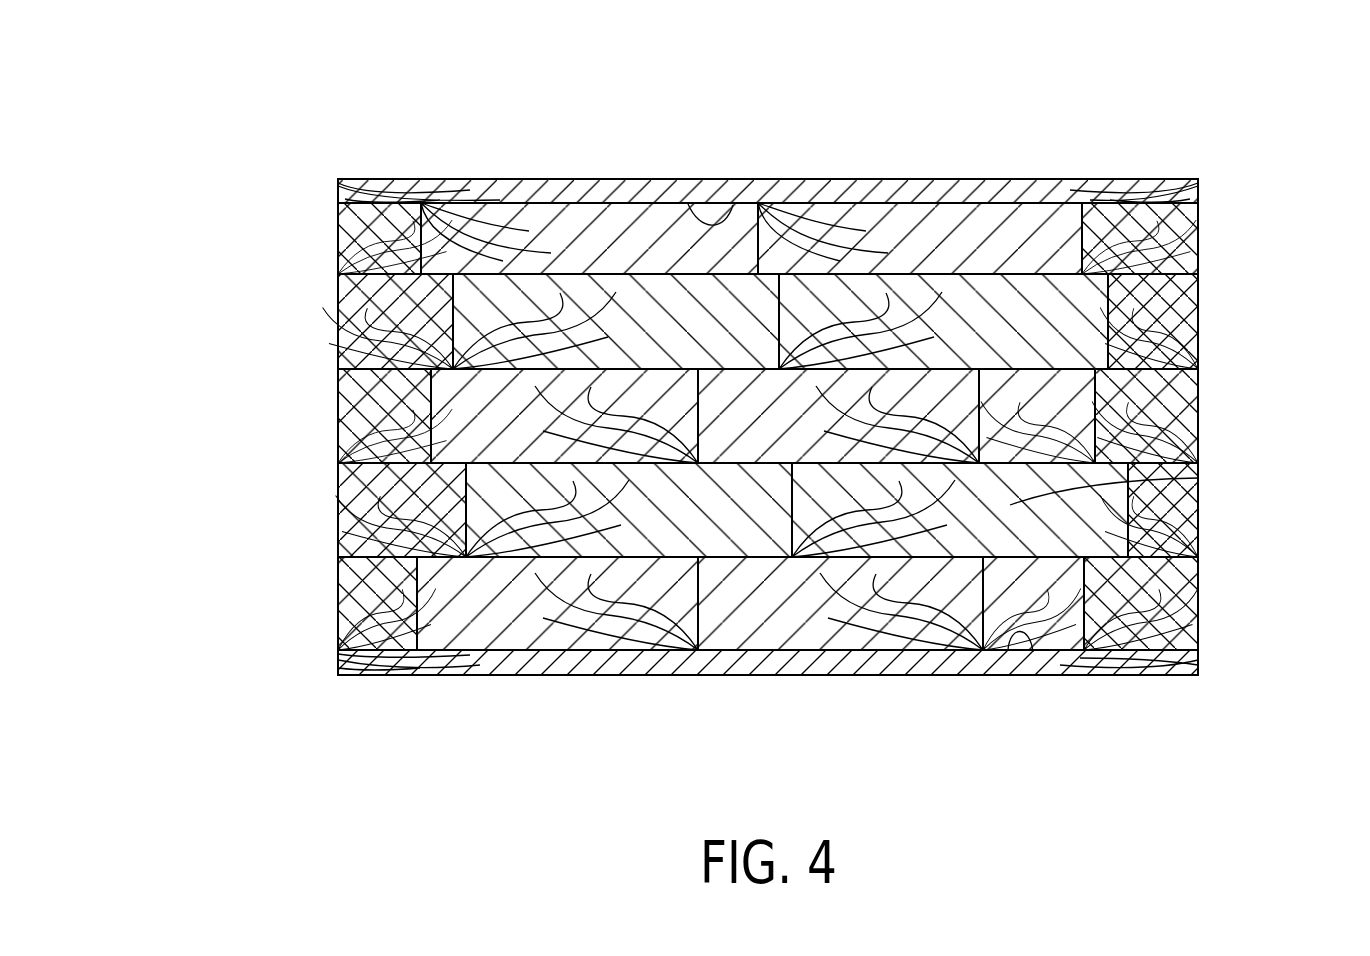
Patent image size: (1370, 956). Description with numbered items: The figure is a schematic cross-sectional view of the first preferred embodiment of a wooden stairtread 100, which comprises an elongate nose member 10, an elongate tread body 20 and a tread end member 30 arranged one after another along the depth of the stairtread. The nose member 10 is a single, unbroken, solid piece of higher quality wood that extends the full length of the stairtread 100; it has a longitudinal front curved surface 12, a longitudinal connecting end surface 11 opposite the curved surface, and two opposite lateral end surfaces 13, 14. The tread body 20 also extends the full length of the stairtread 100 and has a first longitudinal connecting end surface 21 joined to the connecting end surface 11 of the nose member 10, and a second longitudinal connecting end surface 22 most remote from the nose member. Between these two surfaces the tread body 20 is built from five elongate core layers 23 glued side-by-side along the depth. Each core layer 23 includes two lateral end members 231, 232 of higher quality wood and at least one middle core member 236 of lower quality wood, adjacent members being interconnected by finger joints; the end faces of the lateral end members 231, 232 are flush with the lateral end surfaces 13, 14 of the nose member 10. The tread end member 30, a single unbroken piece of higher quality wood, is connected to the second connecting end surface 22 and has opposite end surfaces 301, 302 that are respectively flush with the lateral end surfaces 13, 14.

The wooden stairtread 100 is at (352, 155).
The elongate nose member 10 is at (731, 743).
The longitudinal connecting end surface 11 is at (340, 655).
The longitudinal front curved surface 12 is at (385, 675).
The lateral end surface 13 is at (340, 673).
The lateral end surface 14 is at (1198, 658).
The elongate tread body 20 is at (769, 446).
The first longitudinal connecting end surface 21 is at (1033, 652).
The second longitudinal connecting end surface 22 is at (733, 205).
The elongate core layer 23 is at (749, 505).
The lateral end member 231 is at (358, 232).
The lateral end member 232 is at (1150, 240).
The middle core member 236 is at (1008, 505).
The tread end member 30 is at (761, 126).
The end surface 301 is at (338, 185).
The end surface 302 is at (1200, 190).